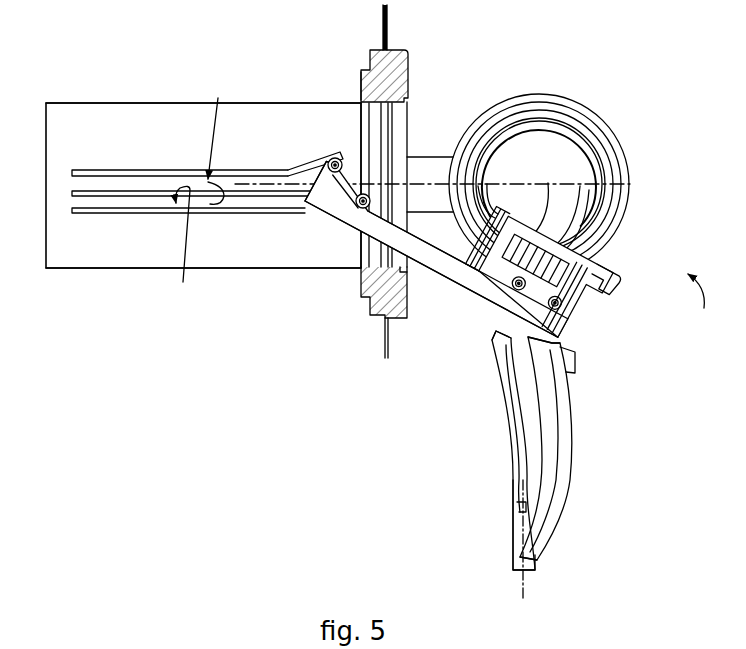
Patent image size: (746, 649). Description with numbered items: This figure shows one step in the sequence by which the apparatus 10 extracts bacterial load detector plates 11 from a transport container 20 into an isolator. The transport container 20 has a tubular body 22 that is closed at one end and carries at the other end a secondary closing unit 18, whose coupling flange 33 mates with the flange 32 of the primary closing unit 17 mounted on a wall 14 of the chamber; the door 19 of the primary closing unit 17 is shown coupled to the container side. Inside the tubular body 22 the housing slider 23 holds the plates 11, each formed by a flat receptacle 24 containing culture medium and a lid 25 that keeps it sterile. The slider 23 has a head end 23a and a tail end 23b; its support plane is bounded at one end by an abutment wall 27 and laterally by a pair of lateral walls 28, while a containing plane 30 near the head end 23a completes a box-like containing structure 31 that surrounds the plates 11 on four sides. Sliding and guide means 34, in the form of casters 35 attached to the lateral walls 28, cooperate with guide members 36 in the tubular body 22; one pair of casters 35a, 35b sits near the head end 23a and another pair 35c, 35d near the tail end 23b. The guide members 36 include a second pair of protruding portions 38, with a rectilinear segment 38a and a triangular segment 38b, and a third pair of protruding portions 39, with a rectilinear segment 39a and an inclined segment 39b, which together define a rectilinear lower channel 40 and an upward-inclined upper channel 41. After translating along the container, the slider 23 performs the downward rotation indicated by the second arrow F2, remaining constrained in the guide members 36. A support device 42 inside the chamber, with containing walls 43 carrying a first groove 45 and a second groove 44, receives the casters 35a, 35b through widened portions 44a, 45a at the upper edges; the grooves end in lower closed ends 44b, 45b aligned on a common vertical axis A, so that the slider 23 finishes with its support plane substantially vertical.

The apparatus 10 is at (343, 329).
The plates 11 is at (541, 231).
The walls 14 is at (389, 24).
The primary closing unit 17 is at (422, 43).
The secondary closing unit 18 is at (366, 49).
The door 19 is at (621, 128).
The transport container 20 is at (165, 99).
The tubular body 22 is at (130, 102).
The housing slider 23 is at (469, 294).
The head end 23a is at (563, 343).
The tail end 23b is at (304, 213).
The receptacle 24 is at (497, 214).
The lid 25 is at (503, 200).
The abutment wall 27 is at (580, 262).
The lateral walls 28 is at (434, 264).
The containing plane 30 is at (562, 251).
The box-like containing structure 31 is at (545, 250).
The flange 32 is at (404, 73).
The coupling flange 33 is at (365, 96).
The sliding and guide means 34 is at (342, 202).
The casters 35 is at (541, 161).
The first caster 35a is at (572, 300).
The second caster 35b is at (599, 281).
The caster 35c is at (369, 194).
The caster 35d is at (341, 159).
The guide members 36 is at (95, 230).
The second pair of protruding portions 38 is at (82, 203).
The first rectilinear segment 38a is at (151, 196).
The second substantially triangular shaped segment 38b is at (302, 187).
The third pair of protruding portions 39 is at (91, 164).
The first rectilinear segment 39a is at (183, 171).
The second segment 39b is at (287, 169).
The lower channel 40 is at (181, 247).
The upper channel 41 is at (214, 135).
The support device 42 is at (510, 465).
The containing walls 43 is at (515, 534).
The second groove 44 is at (521, 437).
The widened portion 44a is at (507, 343).
The lower closed end 44b is at (518, 508).
The first groove 45 is at (559, 446).
The widened portion 45a is at (546, 352).
The lower closed end 45b is at (522, 560).
The common vertical axis A is at (521, 575).
The second arrow F2 is at (702, 303).